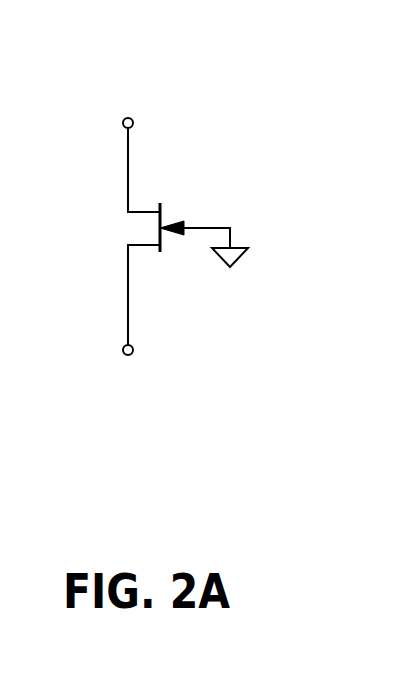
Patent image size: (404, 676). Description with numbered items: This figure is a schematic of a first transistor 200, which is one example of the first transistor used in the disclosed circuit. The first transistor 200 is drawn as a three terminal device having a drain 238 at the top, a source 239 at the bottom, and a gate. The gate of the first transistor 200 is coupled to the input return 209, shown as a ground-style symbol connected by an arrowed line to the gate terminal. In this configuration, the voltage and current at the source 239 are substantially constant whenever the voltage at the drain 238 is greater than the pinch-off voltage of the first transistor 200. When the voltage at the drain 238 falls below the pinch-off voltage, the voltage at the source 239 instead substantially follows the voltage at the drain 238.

The first transistor Q1 200 is at (299, 26).
The input return 209 is at (222, 268).
The drain 238 is at (90, 96).
The source 239 is at (91, 393).